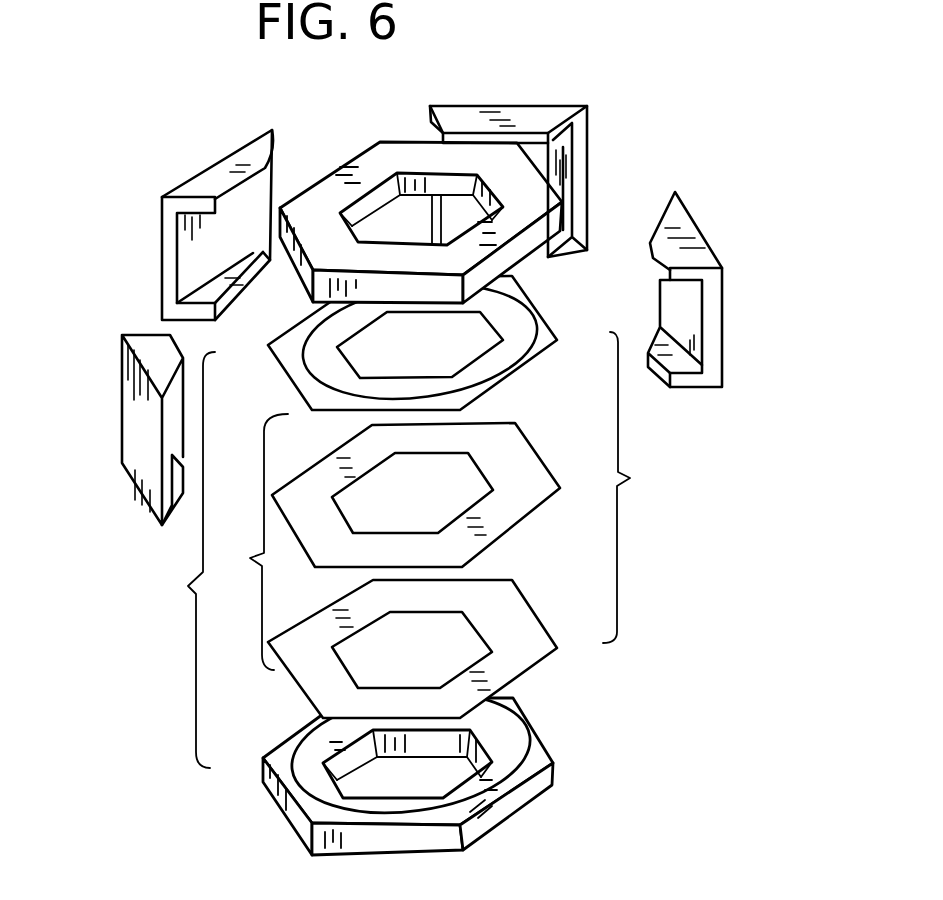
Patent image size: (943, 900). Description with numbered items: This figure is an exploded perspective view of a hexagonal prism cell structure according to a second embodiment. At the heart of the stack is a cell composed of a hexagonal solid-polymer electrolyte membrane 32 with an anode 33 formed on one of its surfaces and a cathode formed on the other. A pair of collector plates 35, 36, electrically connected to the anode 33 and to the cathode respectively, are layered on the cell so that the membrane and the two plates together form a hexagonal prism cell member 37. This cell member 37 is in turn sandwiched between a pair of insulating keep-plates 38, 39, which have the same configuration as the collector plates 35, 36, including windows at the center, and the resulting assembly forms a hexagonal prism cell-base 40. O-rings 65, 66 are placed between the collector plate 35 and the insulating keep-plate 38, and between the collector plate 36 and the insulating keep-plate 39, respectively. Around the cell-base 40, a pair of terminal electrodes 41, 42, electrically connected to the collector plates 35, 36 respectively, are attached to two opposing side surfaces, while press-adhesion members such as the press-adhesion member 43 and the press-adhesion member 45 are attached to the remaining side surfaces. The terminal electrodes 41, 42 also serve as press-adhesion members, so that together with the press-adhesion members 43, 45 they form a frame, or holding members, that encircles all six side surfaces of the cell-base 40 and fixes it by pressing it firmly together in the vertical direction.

The hexagonal solid-polymer electrolyte membrane 32 is at (440, 492).
The anode 33 is at (482, 477).
The collector plate 35 is at (410, 365).
The collector plate 36 is at (533, 632).
The hexagonal prism cell member 37 is at (439, 501).
The insulating keep-plate 38 is at (302, 272).
The insulating keep-plate 39 is at (378, 743).
The hexagonal prism cell-base 40 is at (178, 560).
The terminal electrode 41 is at (746, 291).
The terminal electrode 42 is at (107, 373).
The press-adhesion member 43 is at (518, 88).
The press-adhesion member 45 is at (198, 165).
The o-ring 65 is at (310, 378).
The o-ring 66 is at (298, 730).